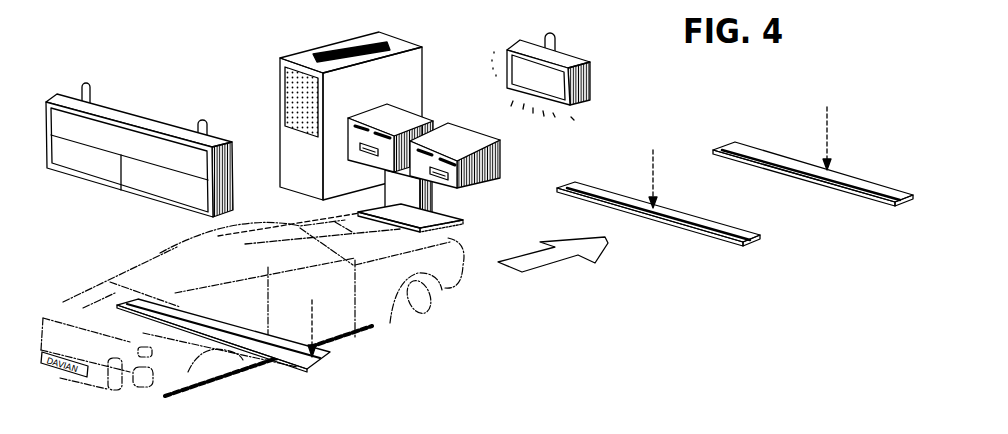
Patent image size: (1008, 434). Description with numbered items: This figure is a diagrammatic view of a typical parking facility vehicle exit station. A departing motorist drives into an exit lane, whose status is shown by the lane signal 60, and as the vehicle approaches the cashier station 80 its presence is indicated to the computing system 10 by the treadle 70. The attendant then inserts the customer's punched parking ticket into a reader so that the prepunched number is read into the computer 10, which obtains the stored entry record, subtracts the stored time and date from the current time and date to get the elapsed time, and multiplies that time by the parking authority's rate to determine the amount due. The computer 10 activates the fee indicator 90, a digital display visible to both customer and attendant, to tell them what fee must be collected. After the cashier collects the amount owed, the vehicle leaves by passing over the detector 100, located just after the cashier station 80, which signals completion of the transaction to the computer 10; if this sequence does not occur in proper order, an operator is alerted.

The computing system 10 is at (423, 63).
The lane signal 60 is at (221, 141).
The treadle 70 is at (340, 361).
The cashier station 80 is at (498, 177).
The fee indicator 90 is at (572, 106).
The detector 100 is at (810, 177).